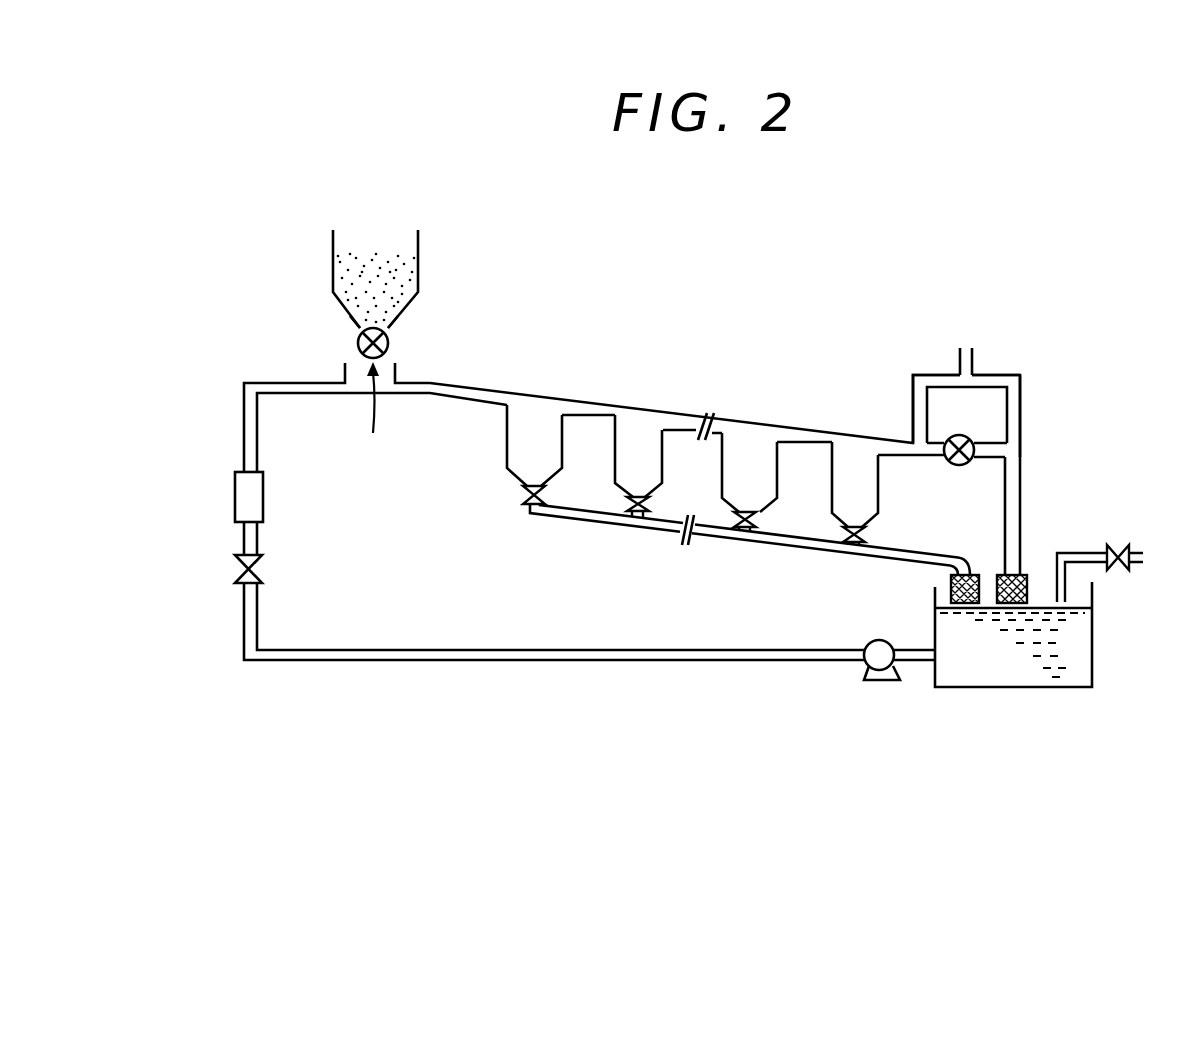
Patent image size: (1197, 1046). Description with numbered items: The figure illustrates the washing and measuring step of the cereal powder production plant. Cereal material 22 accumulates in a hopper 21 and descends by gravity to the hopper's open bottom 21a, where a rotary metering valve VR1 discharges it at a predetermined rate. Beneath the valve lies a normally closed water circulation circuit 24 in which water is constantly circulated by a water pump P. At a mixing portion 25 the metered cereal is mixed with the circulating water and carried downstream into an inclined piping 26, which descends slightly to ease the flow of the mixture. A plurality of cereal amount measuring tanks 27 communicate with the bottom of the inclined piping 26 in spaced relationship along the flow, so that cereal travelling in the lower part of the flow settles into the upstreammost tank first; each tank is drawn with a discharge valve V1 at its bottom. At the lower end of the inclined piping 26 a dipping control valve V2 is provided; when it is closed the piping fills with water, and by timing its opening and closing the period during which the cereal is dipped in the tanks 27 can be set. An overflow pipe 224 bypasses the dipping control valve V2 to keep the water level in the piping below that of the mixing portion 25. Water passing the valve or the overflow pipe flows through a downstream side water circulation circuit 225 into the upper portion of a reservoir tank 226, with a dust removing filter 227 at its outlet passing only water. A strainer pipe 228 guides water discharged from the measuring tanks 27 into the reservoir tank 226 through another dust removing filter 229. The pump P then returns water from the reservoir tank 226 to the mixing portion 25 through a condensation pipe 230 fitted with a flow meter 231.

The hopper 21 is at (330, 252).
The open bottom 21a is at (356, 311).
The cereal material 22 is at (402, 272).
The rotary metering valve VR1 is at (390, 343).
The water circulation circuit 24 is at (320, 394).
The mixing portion 25 is at (378, 417).
The inclined piping 26 is at (652, 412).
The cereal amount measuring tanks 27 is at (512, 450).
The discharge valves V1 is at (526, 492).
The strainer pipe 228 is at (768, 543).
The dust removing filter 229 is at (950, 598).
The overflow pipe 224 is at (990, 378).
The downstream side water circulation circuit 225 is at (1022, 493).
The dipping control valve V2 is at (961, 466).
The dust removing filter 227 is at (1028, 596).
The reservoir tank 226 is at (1080, 655).
The condensation pipe 230 is at (593, 662).
The water pump P is at (873, 660).
The flow meter 231 is at (238, 500).